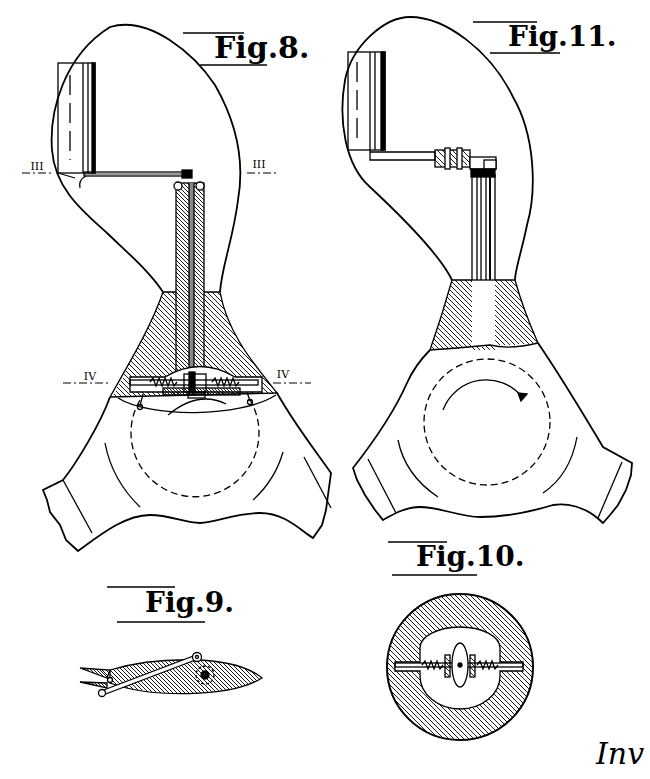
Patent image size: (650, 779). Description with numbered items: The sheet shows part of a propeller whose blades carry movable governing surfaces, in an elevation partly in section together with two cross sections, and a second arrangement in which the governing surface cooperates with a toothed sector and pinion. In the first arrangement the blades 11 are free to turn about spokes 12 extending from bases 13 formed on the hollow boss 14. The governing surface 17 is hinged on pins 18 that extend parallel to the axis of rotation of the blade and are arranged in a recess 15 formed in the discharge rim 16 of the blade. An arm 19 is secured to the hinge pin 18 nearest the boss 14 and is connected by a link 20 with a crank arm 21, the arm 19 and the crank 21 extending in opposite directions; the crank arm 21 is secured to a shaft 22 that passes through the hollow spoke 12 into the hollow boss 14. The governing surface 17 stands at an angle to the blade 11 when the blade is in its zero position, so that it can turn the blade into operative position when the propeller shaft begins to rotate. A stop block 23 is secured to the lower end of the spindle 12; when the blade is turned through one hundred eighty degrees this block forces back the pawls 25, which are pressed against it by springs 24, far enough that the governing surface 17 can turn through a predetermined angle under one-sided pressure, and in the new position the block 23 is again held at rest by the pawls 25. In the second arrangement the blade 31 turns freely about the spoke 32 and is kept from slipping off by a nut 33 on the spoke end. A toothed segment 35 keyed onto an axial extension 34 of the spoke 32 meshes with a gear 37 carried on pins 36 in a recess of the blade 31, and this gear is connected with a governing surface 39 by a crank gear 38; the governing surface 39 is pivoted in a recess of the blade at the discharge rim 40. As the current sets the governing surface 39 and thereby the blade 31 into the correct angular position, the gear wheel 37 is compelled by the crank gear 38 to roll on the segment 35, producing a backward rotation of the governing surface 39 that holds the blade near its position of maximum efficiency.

In FIG. 8, the blade 11 is at (210, 100).
In FIG. 9, the blade 11 is at (233, 667).
In FIG. 8, the spoke 12 is at (204, 256).
In FIG. 9, the spoke 12 is at (230, 694).
In FIG. 8, the base 13 is at (215, 322).
In FIG. 11, the base 13 is at (484, 315).
In FIG. 8, the hollow boss 14 is at (118, 398).
In FIG. 10, the hollow boss 14 is at (517, 630).
In FIG. 8, the recess 15 is at (64, 180).
In FIG. 9, the recess 15 is at (99, 696).
In FIG. 8, the discharge rim 16 is at (91, 218).
In FIG. 8, the governing surface 17 is at (58, 117).
In FIG. 9, the governing surface 17 is at (96, 668).
In FIG. 8, the hinge pin 18 is at (93, 64).
In FIG. 9, the hinge pin 18 is at (110, 680).
In FIG. 8, the arm 19 is at (88, 189).
In FIG. 9, the arm 19 is at (110, 694).
In FIG. 8, the link 20 is at (138, 172).
In FIG. 9, the link 20 is at (153, 692).
In FIG. 8, the crank arm 21 is at (189, 171).
In FIG. 9, the crank arm 21 is at (201, 657).
In FIG. 8, the shaft 22 is at (197, 228).
In FIG. 9, the shaft 22 is at (204, 685).
In FIG. 10, the shaft 22 is at (478, 628).
In FIG. 8, the stop block 23 is at (189, 398).
In FIG. 10, the stop block 23 is at (420, 727).
In FIG. 8, the spring 24 is at (222, 380).
In FIG. 10, the spring 24 is at (521, 661).
In FIG. 8, the pawl 25 is at (157, 360).
In FIG. 10, the pawl 25 is at (452, 655).
In FIG. 11, the blade 31 is at (510, 112).
In FIG. 11, the spoke 32 is at (500, 254).
In FIG. 11, the nut 33 is at (492, 177).
In FIG. 11, the axial extension 34 is at (496, 164).
In FIG. 11, the toothed segment 35 is at (481, 157).
In FIG. 11, the pin 36 is at (450, 150).
In FIG. 11, the gear 37 is at (438, 167).
In FIG. 11, the crank gear 38 is at (407, 150).
In FIG. 11, the governing surface 39 is at (348, 97).
In FIG. 11, the discharge rim 40 is at (361, 172).